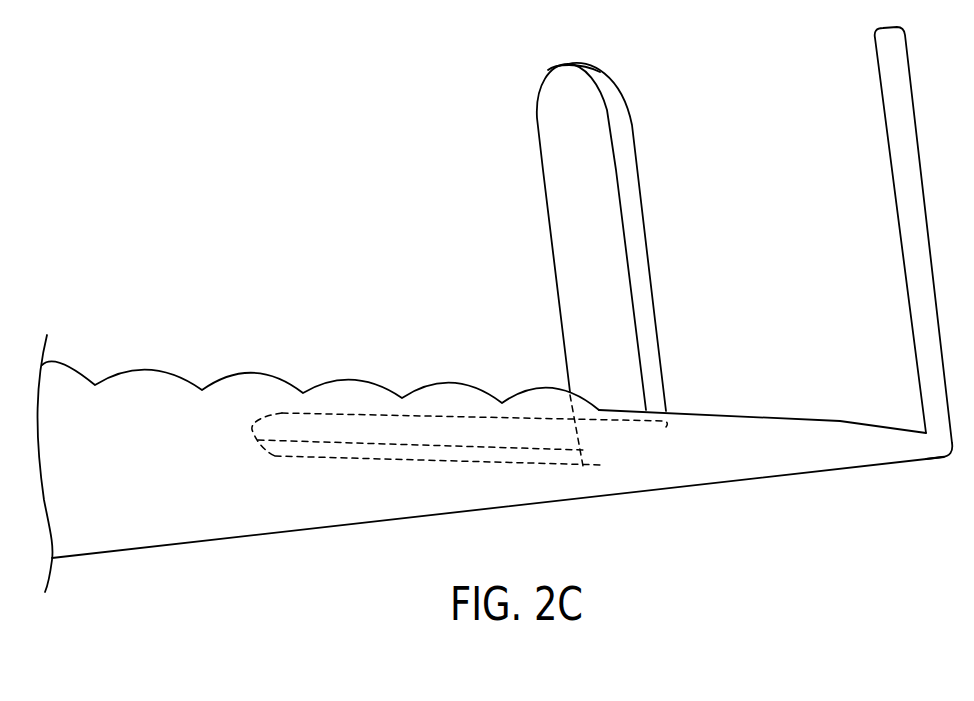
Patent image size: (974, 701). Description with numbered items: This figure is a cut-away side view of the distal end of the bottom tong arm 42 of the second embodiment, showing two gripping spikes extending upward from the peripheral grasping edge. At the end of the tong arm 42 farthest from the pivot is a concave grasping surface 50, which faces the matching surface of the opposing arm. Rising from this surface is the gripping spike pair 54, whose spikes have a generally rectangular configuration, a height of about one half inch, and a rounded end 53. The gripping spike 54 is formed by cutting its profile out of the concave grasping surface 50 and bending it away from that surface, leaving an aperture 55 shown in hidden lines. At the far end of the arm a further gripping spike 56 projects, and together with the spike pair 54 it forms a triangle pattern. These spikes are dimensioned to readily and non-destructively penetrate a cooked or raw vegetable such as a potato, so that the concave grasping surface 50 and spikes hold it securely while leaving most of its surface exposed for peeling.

The tong arm 42 is at (290, 533).
The concave grasping surface 50 is at (352, 380).
The rounded end 53 is at (568, 64).
The gripping spike pair 54 is at (551, 246).
The aperture 55 is at (423, 430).
The gripping spike 56 is at (900, 237).